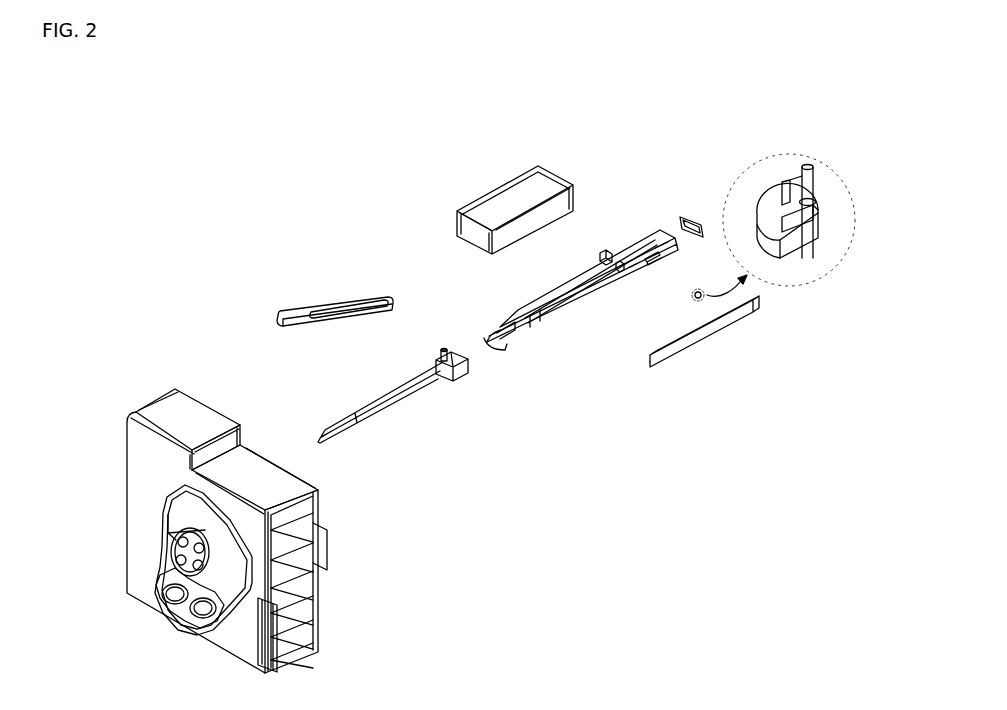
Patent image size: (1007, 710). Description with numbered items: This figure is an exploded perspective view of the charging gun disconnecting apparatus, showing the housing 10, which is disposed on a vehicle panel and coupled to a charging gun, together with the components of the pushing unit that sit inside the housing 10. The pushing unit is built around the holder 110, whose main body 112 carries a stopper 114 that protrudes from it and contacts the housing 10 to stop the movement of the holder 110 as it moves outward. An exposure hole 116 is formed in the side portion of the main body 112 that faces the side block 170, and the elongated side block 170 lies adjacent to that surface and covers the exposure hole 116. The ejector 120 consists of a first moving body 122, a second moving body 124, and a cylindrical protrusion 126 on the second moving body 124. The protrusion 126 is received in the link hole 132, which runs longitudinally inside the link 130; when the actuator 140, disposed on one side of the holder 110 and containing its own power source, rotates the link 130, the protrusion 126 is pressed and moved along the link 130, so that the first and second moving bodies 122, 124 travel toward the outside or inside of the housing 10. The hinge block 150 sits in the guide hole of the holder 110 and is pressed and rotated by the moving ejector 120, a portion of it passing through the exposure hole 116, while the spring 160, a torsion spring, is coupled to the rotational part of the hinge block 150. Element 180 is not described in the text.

The housing 10 is at (123, 403).
The holder 110 is at (592, 305).
The main body 112 is at (553, 317).
The stopper 114 is at (603, 254).
The exposure hole 116 is at (650, 261).
The ejector 120 is at (411, 400).
The first moving body 122 is at (450, 377).
The second moving body 124 is at (397, 402).
The protrusion 126 is at (443, 357).
The link 130 is at (292, 295).
The link hole 132 is at (349, 291).
The actuator 140 is at (490, 183).
The hinge block 150 is at (774, 213).
The spring 160 is at (808, 170).
The side block 170 is at (715, 332).
The switch 180 is at (683, 215).